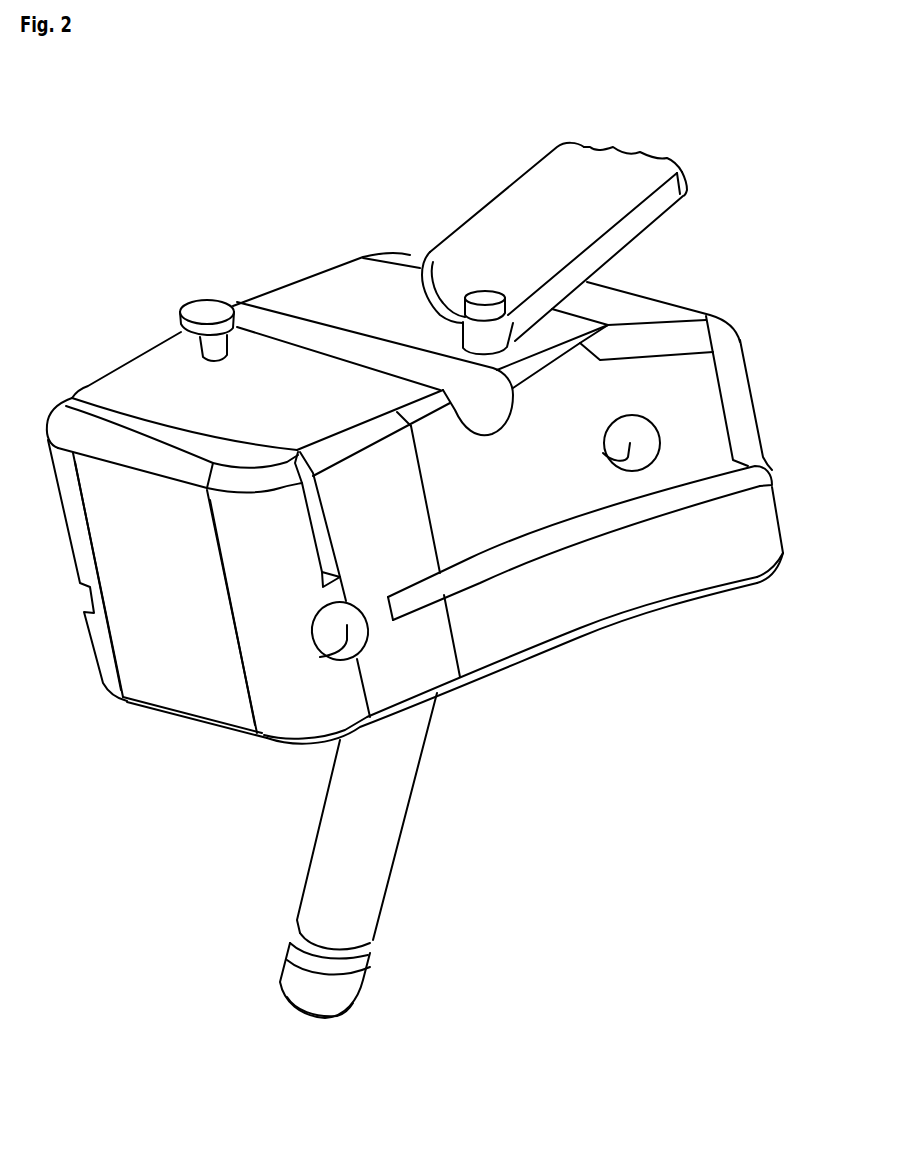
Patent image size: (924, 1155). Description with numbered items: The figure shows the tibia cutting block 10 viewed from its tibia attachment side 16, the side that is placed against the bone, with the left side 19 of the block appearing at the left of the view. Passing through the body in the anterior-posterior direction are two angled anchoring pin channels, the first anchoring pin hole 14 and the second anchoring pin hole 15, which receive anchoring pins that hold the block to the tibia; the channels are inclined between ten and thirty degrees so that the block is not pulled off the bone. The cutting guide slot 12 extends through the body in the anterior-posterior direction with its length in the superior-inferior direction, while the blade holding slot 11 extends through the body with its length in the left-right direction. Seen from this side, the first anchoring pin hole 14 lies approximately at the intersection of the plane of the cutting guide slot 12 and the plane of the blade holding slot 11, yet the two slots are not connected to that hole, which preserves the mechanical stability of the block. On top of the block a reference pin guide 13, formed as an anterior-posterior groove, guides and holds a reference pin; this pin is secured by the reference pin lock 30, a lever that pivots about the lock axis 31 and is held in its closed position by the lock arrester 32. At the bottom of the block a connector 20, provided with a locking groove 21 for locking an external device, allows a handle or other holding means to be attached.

The tibia cutting block 10 is at (402, 170).
The blade holding slot 11 is at (622, 515).
The cutting guide slot 12 is at (298, 452).
The reference pin guide 13 is at (483, 410).
The first anchoring pin hole 14 is at (320, 657).
The second anchoring pin hole 15 is at (603, 453).
The tibia attachment side 16 is at (593, 590).
The left side 19 is at (178, 682).
The connector 20 is at (417, 840).
The locking groove 21 is at (330, 962).
The reference pin lock 30 is at (607, 173).
The lock axis 31 is at (485, 302).
The lock arrester 32 is at (203, 313).